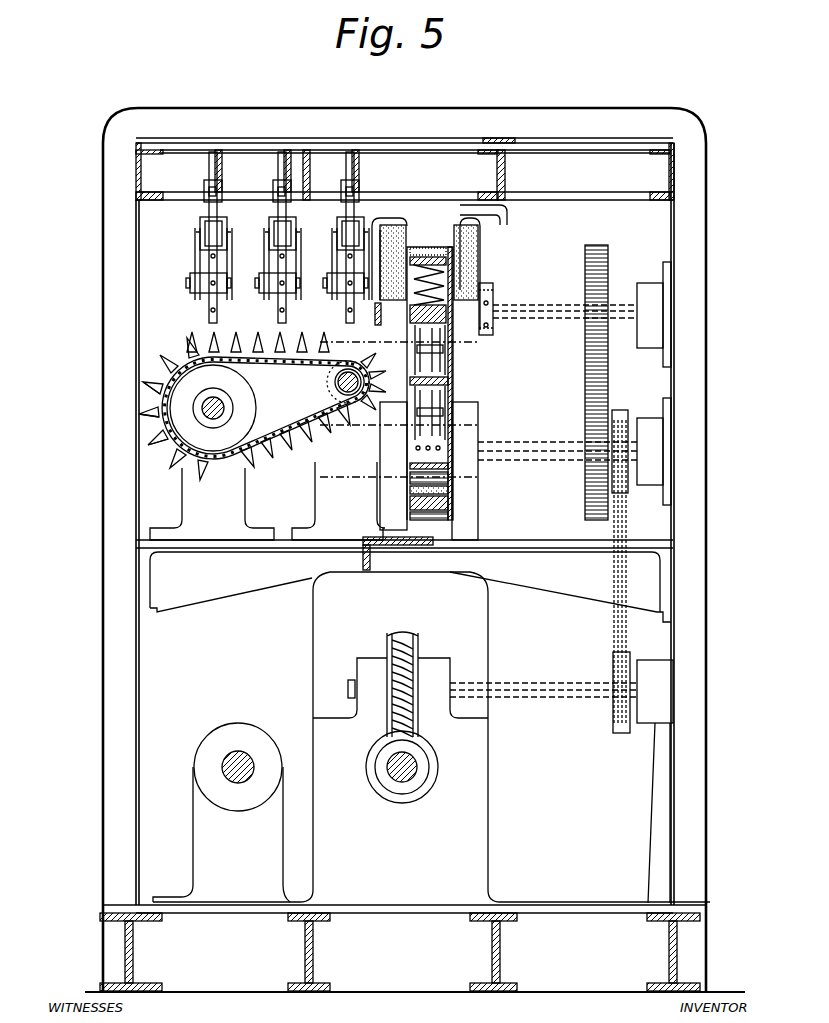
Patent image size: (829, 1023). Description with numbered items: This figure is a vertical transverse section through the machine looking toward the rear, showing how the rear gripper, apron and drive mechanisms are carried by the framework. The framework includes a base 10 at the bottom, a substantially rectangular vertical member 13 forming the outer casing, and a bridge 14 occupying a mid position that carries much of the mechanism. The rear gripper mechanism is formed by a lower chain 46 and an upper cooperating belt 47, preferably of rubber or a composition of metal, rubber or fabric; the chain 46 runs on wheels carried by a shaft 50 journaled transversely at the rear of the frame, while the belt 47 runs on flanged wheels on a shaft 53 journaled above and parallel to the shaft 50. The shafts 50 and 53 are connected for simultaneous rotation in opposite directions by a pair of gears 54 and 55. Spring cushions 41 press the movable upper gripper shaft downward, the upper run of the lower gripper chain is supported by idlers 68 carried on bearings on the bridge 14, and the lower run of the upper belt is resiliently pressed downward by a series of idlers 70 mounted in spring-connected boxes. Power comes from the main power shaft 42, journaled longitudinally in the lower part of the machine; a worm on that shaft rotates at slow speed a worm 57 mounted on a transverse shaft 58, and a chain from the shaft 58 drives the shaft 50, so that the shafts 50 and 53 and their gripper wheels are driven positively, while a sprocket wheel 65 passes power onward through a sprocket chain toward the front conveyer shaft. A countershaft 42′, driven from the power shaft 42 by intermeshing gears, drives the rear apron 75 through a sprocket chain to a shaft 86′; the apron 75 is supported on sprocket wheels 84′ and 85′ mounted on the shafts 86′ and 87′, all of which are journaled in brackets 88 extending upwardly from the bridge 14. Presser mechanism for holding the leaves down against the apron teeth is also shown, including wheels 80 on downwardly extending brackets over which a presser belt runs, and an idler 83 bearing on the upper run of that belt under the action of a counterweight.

The base 10 is at (498, 946).
The vertical member 13 is at (587, 120).
The bridge 14 is at (560, 582).
The spring cushions 41 is at (430, 285).
The main power shaft 42 is at (400, 782).
The countershaft 42′ is at (245, 755).
The lower chain 46 is at (452, 385).
The upper belt 47 is at (430, 252).
The shaft 50 is at (524, 455).
The shaft 53 is at (538, 312).
The gear 54 is at (592, 495).
The gear 55 is at (590, 350).
The worm 57 is at (392, 634).
The transverse shaft 58 is at (545, 693).
The sprocket wheel 65 is at (493, 303).
The idlers 68 is at (447, 425).
The idlers 70 is at (455, 372).
The rear apron 75 is at (178, 358).
The wheels 80 is at (212, 270).
The idler 83 is at (206, 237).
The sprocket wheel 84′ is at (180, 407).
The sprocket wheel 85′ is at (340, 374).
The shaft 86′ is at (213, 416).
The shaft 87′ is at (330, 390).
The brackets 88 is at (192, 508).